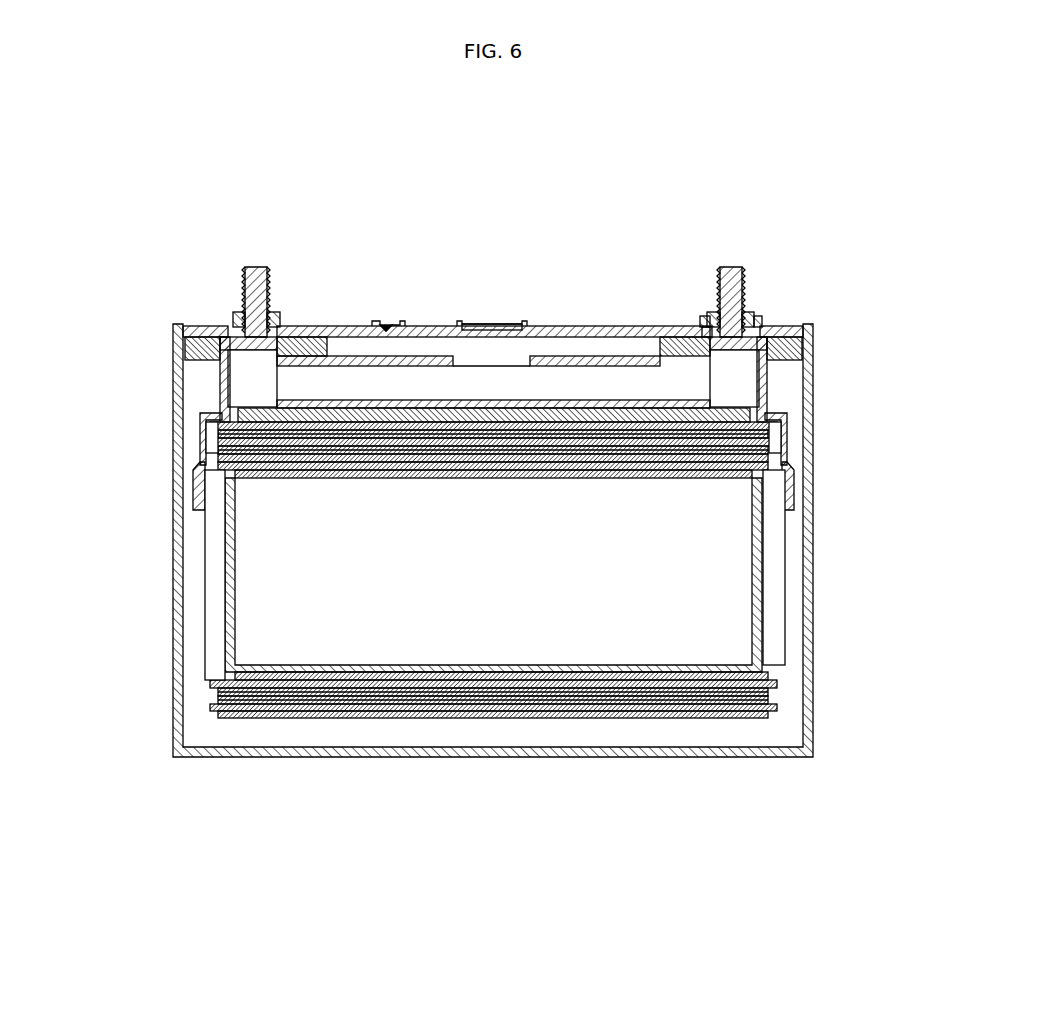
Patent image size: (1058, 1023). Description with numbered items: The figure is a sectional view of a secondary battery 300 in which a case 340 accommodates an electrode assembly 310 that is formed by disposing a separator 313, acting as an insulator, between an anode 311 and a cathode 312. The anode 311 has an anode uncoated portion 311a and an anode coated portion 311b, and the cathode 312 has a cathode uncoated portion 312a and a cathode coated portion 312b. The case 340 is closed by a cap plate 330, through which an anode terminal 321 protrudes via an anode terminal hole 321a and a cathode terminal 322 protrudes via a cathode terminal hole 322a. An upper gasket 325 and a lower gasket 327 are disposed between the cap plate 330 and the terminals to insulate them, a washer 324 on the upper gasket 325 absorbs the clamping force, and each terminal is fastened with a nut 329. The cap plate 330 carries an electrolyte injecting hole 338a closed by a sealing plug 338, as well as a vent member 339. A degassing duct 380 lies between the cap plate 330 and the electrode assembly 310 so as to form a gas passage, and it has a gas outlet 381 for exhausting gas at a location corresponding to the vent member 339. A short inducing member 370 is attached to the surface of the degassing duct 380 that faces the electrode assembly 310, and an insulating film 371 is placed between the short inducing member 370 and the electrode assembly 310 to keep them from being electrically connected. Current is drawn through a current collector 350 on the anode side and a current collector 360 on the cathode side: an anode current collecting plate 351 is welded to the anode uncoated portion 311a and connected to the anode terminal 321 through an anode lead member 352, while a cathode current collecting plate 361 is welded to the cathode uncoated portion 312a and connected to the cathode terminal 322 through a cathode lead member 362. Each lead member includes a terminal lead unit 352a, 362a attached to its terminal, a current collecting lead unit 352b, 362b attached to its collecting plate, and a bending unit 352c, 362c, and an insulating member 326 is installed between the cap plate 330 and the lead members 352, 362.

The secondary battery 300 is at (515, 172).
The electrode assembly 310 is at (497, 643).
The anode 311 is at (478, 643).
The anode uncoated portion 311a is at (212, 712).
The anode coated portion 311b is at (283, 718).
The cathode 312 is at (516, 655).
The cathode uncoated portion 312a is at (775, 712).
The cathode coated portion 312b is at (710, 718).
The separator 313 is at (400, 695).
The anode terminal 321 is at (257, 266).
The anode terminal hole 321a is at (272, 330).
The cathode terminal 322 is at (731, 266).
The cathode terminal hole 322a is at (725, 330).
The washer 324 is at (705, 318).
The upper gasket 325 is at (762, 326).
The insulating member 326 is at (324, 326).
The lower gasket 327 is at (708, 333).
The nut 329 is at (238, 312).
The cap plate 330 is at (446, 324).
The sealing plug 338 is at (377, 324).
The electrolyte injecting hole 338a is at (390, 324).
The vent member 339 is at (470, 324).
The case 340 is at (812, 655).
The current collector 350 is at (138, 507).
The anode current collecting plate 351 is at (100, 502).
The anode lead member 352 is at (164, 423).
The terminal lead unit 352a is at (200, 345).
The current collecting lead unit 352b is at (212, 437).
The bending unit 352c is at (205, 415).
The current collector 360 is at (848, 500).
The cathode current collecting plate 361 is at (887, 502).
The cathode lead member 362 is at (822, 423).
The terminal lead unit 362a is at (800, 347).
The current collecting lead unit 362b is at (778, 437).
The bending unit 362c is at (785, 415).
The short inducing member 370 is at (610, 418).
The insulating film 371 is at (567, 406).
The degassing duct 380 is at (541, 364).
The gas outlet 381 is at (502, 358).